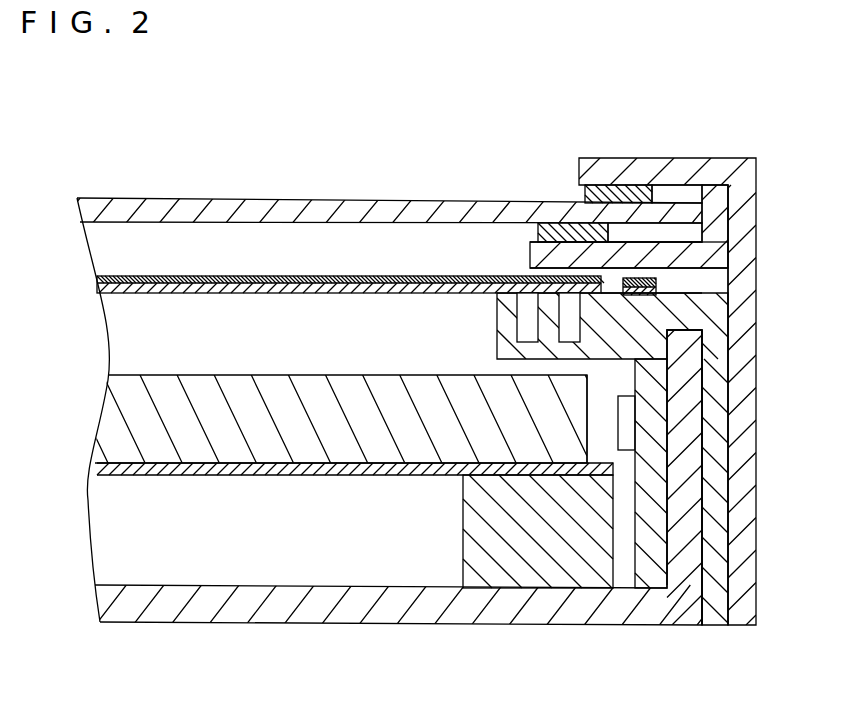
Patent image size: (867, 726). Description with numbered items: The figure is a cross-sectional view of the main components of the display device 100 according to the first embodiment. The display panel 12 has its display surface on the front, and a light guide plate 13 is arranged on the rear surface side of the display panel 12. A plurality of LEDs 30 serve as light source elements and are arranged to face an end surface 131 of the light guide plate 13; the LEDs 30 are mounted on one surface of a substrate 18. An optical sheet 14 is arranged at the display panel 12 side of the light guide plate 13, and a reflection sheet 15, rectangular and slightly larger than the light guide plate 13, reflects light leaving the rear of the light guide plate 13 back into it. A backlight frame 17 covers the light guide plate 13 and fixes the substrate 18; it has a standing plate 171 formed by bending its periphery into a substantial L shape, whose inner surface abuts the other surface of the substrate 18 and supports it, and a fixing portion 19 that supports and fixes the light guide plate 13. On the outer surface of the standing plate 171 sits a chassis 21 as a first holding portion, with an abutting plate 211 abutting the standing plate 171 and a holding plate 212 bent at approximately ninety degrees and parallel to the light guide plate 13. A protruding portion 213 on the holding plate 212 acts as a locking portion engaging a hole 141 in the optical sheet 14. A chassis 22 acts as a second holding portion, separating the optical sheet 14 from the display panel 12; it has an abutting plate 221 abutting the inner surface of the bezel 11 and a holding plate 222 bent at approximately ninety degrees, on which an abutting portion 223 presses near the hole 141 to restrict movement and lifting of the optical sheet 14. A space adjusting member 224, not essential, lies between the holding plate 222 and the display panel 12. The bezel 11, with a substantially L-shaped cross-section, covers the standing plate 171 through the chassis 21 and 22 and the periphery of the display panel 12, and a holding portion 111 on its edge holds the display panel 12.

The display device 100 is at (812, 60).
The bezel 11 is at (710, 344).
The holding portion 111 is at (622, 195).
The display panel 12 is at (380, 204).
The light guide plate 13 is at (302, 530).
The end surface 131 is at (587, 423).
The optical sheet 14 is at (97, 287).
The hole 141 is at (655, 285).
The reflection sheet 15 is at (97, 467).
The backlight frame 17 is at (413, 522).
The standing plate 171 is at (683, 575).
The substrate 18 is at (645, 582).
The fixing portion 19 is at (527, 580).
The chassis 21 is at (672, 459).
The abutting plate 211 is at (718, 547).
The holding plate 212 is at (668, 338).
The protruding portion 213 is at (617, 293).
The chassis 22 is at (657, 177).
The abutting plate 221 is at (720, 217).
The holding plate 222 is at (669, 250).
The abutting portion 223 is at (558, 268).
The space adjusting member 224 is at (577, 230).
The LEDs 30 is at (628, 438).